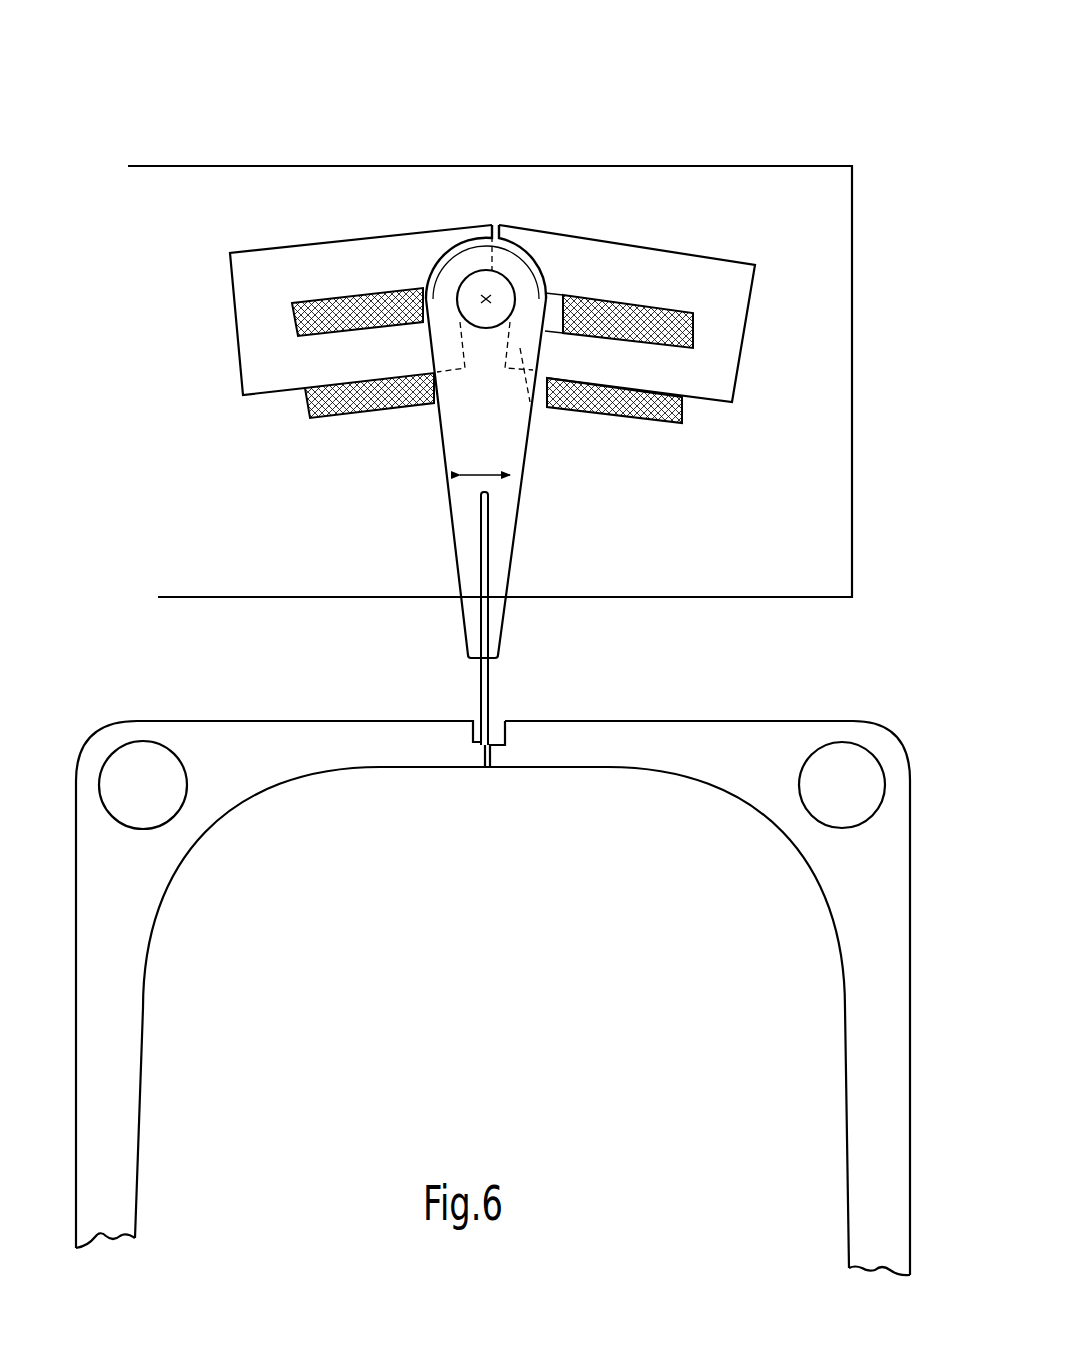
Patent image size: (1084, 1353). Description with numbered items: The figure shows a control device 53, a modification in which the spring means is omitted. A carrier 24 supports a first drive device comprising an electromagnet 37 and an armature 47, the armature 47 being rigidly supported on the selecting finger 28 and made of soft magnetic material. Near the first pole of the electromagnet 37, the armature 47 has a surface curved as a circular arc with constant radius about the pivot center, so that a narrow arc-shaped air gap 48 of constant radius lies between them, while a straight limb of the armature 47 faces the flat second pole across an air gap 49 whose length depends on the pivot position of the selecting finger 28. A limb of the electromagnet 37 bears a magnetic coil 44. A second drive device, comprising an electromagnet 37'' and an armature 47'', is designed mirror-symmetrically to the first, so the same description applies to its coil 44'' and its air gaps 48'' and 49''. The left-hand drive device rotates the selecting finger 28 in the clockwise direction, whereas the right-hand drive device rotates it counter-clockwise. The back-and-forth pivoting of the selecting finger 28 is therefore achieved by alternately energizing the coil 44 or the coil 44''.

The carrier 24 is at (755, 190).
The selecting finger 28 is at (504, 538).
The electromagnet 37 is at (361, 234).
The electromagnet 37'' is at (627, 236).
The magnetic coil 44 is at (363, 398).
The magnetic coil 44'' is at (635, 394).
The armature 47 is at (501, 212).
The armature 47'' is at (568, 418).
The air gap 48 is at (459, 207).
The air gap 48'' is at (563, 208).
The air gap 49 is at (392, 347).
The air gap 49'' is at (585, 352).
The control device 53 is at (752, 92).